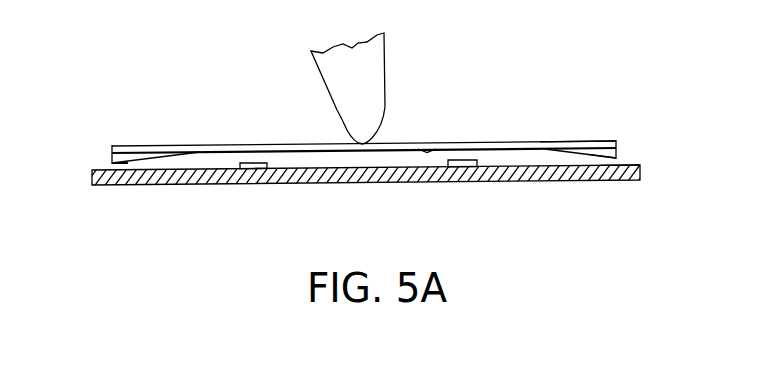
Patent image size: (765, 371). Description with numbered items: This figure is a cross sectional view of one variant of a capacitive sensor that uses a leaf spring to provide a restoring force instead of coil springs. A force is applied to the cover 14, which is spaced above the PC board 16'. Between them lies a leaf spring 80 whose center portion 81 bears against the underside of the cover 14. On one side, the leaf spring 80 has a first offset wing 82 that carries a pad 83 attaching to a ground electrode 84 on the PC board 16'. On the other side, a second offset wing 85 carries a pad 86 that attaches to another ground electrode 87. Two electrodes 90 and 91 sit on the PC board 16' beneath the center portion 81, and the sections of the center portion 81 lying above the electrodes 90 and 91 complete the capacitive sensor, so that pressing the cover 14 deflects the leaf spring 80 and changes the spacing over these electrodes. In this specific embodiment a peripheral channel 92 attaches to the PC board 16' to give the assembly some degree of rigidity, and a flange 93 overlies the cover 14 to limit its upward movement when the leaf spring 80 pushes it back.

The cover 14 is at (508, 139).
The PC board 16' is at (362, 190).
The leaf spring 80 is at (270, 134).
The center portion 81 is at (447, 141).
The first offset wing 82 is at (160, 146).
The pad 83 is at (112, 162).
The ground electrode 84 is at (130, 163).
The second offset wing 85 is at (565, 141).
The pad 86 is at (620, 147).
The ground electrode 87 is at (633, 167).
The electrode 90 is at (257, 168).
The electrode 91 is at (462, 167).
The peripheral channel 92 is at (622, 141).
The flange 93 is at (615, 141).